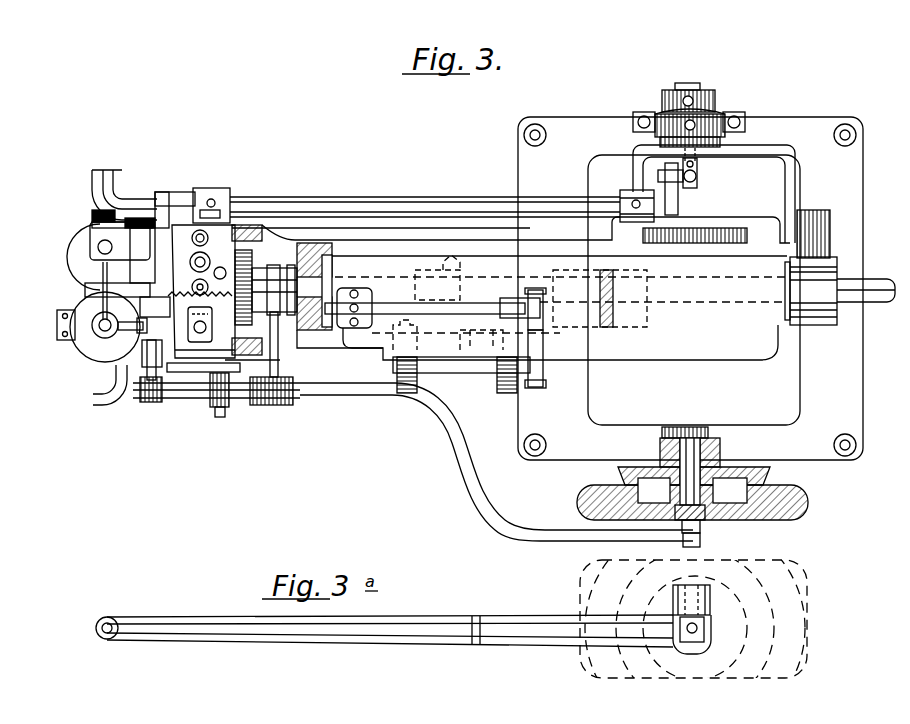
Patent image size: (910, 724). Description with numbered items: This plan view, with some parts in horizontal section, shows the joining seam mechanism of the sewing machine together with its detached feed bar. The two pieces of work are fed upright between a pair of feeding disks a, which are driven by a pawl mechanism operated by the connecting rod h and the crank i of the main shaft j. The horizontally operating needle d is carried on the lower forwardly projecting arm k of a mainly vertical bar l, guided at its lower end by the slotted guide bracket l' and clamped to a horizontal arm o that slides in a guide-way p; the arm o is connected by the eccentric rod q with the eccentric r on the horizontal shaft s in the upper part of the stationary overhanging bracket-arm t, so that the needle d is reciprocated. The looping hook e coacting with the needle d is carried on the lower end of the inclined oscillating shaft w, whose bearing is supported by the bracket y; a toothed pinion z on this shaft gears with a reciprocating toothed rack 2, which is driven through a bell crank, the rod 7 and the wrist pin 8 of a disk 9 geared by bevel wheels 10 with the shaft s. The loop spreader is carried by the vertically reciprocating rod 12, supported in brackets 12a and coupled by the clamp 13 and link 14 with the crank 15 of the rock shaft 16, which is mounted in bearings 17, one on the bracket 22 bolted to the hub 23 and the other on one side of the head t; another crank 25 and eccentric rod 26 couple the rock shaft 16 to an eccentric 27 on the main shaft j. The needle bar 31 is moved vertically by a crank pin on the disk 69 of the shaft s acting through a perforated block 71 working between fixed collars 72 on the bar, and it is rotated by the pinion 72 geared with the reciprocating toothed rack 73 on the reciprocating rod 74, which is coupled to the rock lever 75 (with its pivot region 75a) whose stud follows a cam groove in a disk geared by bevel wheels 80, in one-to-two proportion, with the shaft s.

In FIG. 3, the bracket 22 is at (777, 150).
In FIG. 3, the eccentric 27 is at (682, 112).
In FIG. 3, the eccentric rod 26 is at (655, 117).
In FIG. 3, the main shaft j is at (690, 83).
In FIG. 3, the crank 25 is at (678, 198).
In FIG. 3, the bearings 17 is at (625, 190).
In FIG. 3, the rock shaft 16 is at (390, 200).
In FIG. 3, the crank 15 is at (157, 207).
In FIG. 3, the link 14 is at (178, 230).
In FIG. 3, the clamp 13 is at (93, 218).
In FIG. 3, the oscillating shaft w is at (37, 276).
In FIG. 3, the perforated block 71 is at (222, 259).
In FIG. 3, the pinion 72 is at (192, 264).
In FIG. 3, the needle bar 31 is at (209, 286).
In FIG. 3, the reciprocating toothed rack 73 is at (196, 328).
In FIG. 3, the bracket-arm t is at (467, 242).
In FIG. 3, the disk 69 is at (246, 250).
In FIG. 3, the eccentric r is at (274, 277).
In FIG. 3, the hub 23 is at (817, 325).
In FIG. 3, the horizontal shaft s is at (873, 300).
In FIG. 3, the bevel wheels 80 is at (613, 310).
In FIG. 3, the bevel wheels 10 is at (453, 315).
In FIG. 3, the disk 9 is at (447, 347).
In FIG. 3, the reciprocating rod 74 is at (397, 303).
In FIG. 3, the bolt head 75a is at (525, 307).
In FIG. 3, the rock lever 75 is at (547, 380).
In FIG. 3, the rod 7 is at (457, 373).
In FIG. 3, the wrist pin 8 is at (500, 397).
In FIG. 3, the looping hook e is at (82, 263).
In FIG. 3, the vertically reciprocating rod 12 is at (95, 235).
In FIG. 3, the brackets 12a is at (100, 246).
In FIG. 3, the feeding disks a is at (95, 250).
In FIG. 3, the reciprocating toothed rack 2 is at (97, 327).
In FIG. 3, the arm k is at (108, 347).
In FIG. 3, the needle d is at (110, 297).
In FIG. 3, the toothed pinion z is at (105, 275).
In FIG. 3, the bracket y is at (163, 275).
In FIG. 3, the guide bracket l' is at (90, 381).
In FIG. 3, the horizontal arm o is at (170, 398).
In FIG. 3, the bar l is at (151, 393).
In FIG. 3, the guide-way p is at (220, 418).
In FIG. 3, the eccentric rod q is at (273, 405).
In FIG. 3, the crank i is at (707, 525).
In FIG. 3A, the crank i is at (710, 605).
In FIG. 3, the connecting rod h is at (487, 510).
In FIG. 3A, the connecting rod h is at (255, 640).